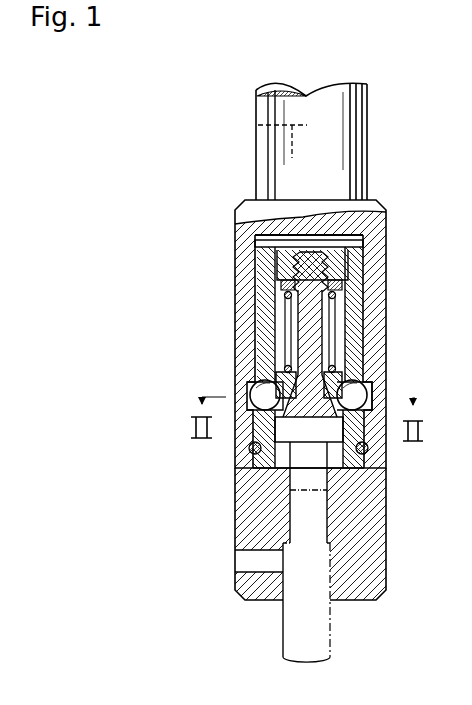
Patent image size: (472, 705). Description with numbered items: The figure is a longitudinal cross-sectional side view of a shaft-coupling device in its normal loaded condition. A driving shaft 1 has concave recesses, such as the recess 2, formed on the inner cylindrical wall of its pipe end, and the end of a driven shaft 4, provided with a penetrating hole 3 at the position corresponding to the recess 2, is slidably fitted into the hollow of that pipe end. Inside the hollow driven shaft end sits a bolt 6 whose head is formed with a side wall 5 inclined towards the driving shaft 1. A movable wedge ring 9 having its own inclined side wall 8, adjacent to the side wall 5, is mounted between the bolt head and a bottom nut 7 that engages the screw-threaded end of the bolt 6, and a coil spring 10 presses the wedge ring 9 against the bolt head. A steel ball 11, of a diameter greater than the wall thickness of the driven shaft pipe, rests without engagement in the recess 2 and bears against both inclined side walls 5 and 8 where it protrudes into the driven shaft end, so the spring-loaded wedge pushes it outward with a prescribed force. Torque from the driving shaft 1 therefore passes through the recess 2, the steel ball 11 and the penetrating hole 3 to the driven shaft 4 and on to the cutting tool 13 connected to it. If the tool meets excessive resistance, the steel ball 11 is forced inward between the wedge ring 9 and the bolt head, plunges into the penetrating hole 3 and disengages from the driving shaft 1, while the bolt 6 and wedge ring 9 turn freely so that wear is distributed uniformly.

The driving shaft 1 is at (362, 152).
The recess 2 is at (370, 383).
The penetrating hole 3 is at (363, 367).
The driven shaft 4 is at (373, 521).
The inclined side wall 5 is at (390, 398).
The bolt 6 is at (332, 321).
The bottom nut 7 is at (362, 250).
The inclined side wall 8 is at (330, 401).
The wedge ring 9 is at (252, 379).
The coil spring 10 is at (305, 319).
The steel ball 11 is at (249, 407).
The cutting tool 13 is at (325, 643).